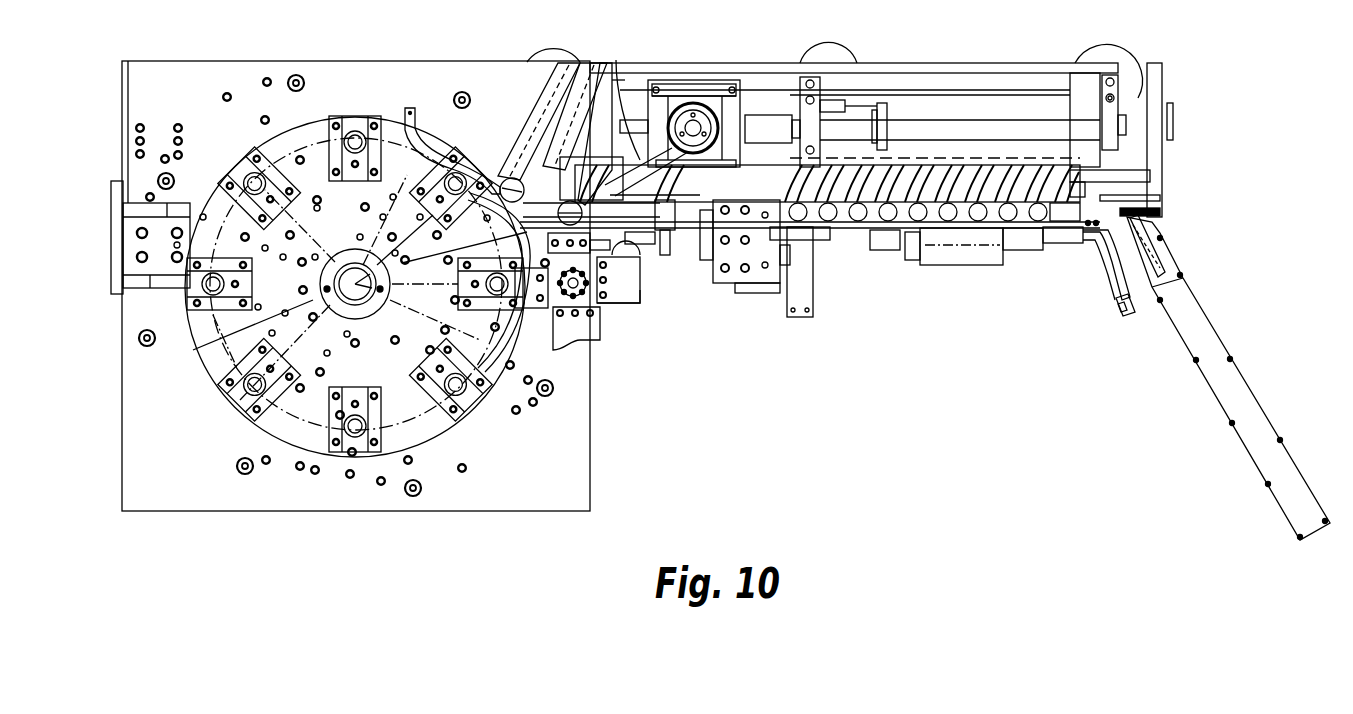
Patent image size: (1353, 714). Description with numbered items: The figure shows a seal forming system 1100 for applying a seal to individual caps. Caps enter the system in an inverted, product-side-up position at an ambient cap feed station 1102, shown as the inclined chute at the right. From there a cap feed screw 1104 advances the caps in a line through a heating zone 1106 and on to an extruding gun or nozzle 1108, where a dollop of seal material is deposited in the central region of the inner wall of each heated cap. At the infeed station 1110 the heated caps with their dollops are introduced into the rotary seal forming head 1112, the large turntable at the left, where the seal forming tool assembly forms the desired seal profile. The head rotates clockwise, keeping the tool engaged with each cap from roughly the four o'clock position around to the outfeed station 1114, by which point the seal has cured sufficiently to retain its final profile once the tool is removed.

The seal forming system 1100 is at (358, 532).
The ambient cap feed station 1102 is at (1167, 268).
The cap feed screw 1104 is at (950, 162).
The heating zone 1106 is at (952, 246).
The extruding gun or nozzle 1108 is at (703, 240).
The infeed station 1110 is at (615, 108).
The rotary seal forming head 1112 is at (478, 390).
The outfeed station 1114 is at (492, 177).